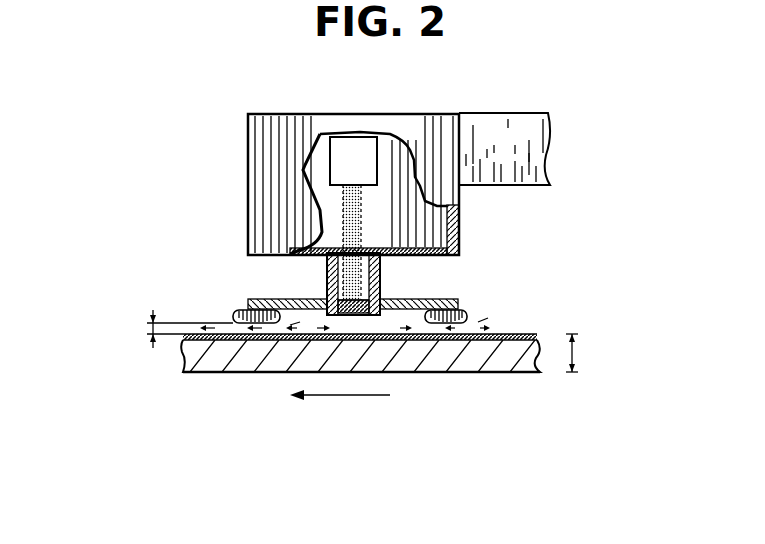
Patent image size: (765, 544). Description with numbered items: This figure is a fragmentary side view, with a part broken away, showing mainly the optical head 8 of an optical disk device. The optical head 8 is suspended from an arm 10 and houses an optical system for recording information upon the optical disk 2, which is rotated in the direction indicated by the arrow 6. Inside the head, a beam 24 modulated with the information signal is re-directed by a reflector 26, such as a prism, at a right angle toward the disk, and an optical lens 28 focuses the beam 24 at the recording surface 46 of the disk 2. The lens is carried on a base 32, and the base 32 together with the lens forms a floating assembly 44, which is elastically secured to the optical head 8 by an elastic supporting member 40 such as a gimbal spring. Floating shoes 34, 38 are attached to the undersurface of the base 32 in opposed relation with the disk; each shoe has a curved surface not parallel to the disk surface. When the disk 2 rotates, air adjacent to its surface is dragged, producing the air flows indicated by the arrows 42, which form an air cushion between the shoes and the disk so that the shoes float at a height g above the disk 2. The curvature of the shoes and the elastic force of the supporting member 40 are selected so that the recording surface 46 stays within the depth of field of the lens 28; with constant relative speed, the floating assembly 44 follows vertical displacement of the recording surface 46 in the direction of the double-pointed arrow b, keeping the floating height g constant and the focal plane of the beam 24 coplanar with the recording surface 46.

The optical disk 2 is at (524, 350).
The arrow 6 is at (340, 407).
The optical head 8 is at (274, 114).
The arm 10 is at (496, 113).
The beam 24 is at (358, 219).
The reflector 26 is at (356, 150).
The optical lens 28 is at (380, 270).
The base 32 is at (318, 306).
The floating shoe 34 is at (238, 312).
The floating shoe 38 is at (462, 312).
The elastic supporting member 40 is at (420, 255).
The arrow 42 is at (354, 322).
The floating assembly 44 is at (262, 288).
The recording surface 46 is at (530, 332).
The floating height g is at (182, 329).
The double-pointed arrow b is at (579, 353).